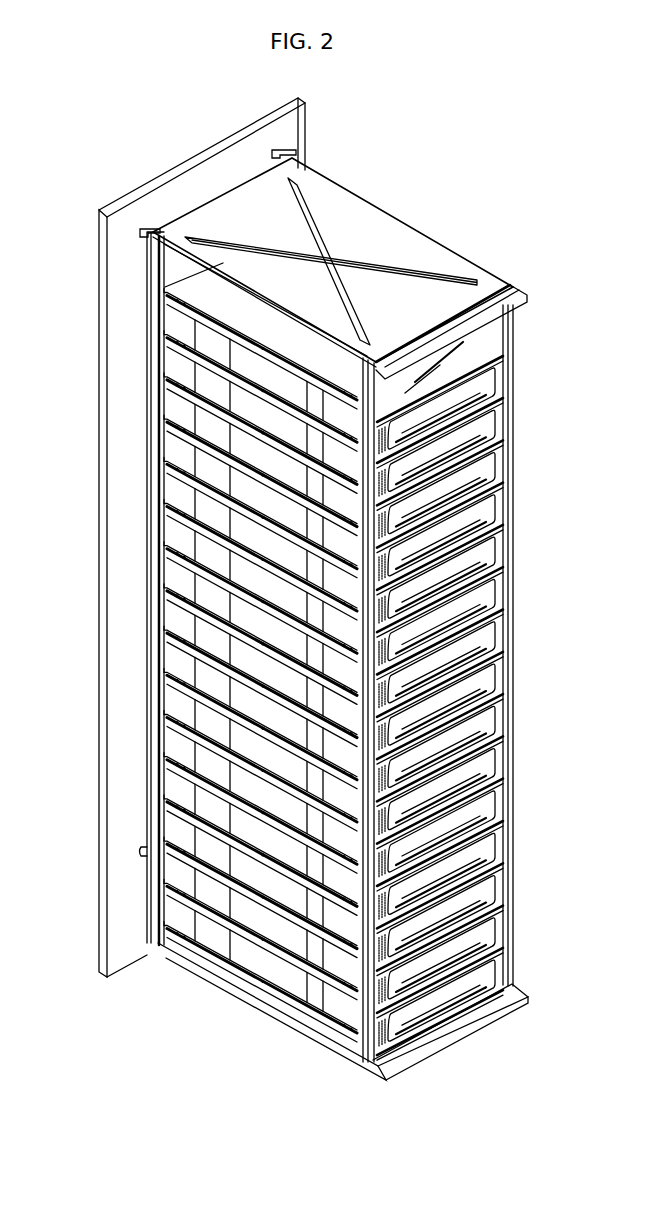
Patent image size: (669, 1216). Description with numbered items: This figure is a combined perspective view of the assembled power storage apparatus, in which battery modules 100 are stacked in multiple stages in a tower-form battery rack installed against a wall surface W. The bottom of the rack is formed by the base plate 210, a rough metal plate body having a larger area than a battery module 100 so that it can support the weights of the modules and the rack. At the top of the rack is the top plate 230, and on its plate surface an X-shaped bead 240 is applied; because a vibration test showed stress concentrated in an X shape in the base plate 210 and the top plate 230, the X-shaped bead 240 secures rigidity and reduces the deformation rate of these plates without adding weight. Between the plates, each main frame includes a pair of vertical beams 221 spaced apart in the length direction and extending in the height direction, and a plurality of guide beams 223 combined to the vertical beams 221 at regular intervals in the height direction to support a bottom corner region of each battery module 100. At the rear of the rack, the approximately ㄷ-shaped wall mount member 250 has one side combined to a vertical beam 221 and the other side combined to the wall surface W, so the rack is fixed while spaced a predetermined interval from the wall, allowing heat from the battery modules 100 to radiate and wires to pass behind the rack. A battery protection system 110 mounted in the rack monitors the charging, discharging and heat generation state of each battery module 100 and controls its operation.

The wall surface W is at (297, 127).
The battery module 100 is at (499, 545).
The battery protection system 110 is at (499, 331).
The base plate 210 is at (267, 1000).
The vertical beam 221 is at (148, 568).
The guide beam 223 is at (188, 648).
The top plate 230 is at (397, 247).
The bead 240 is at (323, 247).
The wall mount member 250 is at (263, 140).